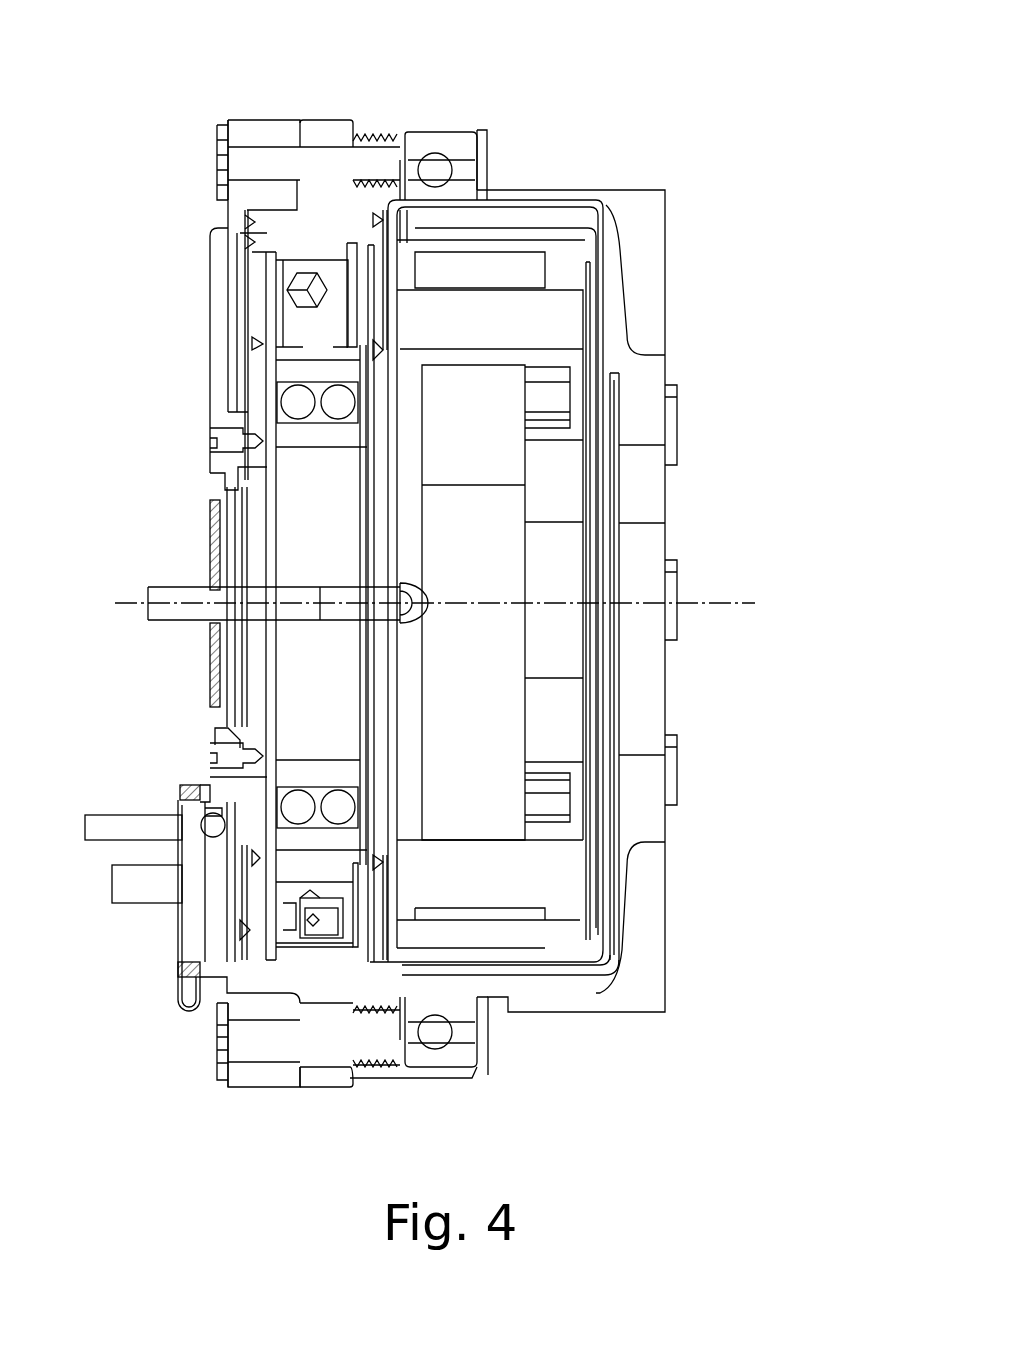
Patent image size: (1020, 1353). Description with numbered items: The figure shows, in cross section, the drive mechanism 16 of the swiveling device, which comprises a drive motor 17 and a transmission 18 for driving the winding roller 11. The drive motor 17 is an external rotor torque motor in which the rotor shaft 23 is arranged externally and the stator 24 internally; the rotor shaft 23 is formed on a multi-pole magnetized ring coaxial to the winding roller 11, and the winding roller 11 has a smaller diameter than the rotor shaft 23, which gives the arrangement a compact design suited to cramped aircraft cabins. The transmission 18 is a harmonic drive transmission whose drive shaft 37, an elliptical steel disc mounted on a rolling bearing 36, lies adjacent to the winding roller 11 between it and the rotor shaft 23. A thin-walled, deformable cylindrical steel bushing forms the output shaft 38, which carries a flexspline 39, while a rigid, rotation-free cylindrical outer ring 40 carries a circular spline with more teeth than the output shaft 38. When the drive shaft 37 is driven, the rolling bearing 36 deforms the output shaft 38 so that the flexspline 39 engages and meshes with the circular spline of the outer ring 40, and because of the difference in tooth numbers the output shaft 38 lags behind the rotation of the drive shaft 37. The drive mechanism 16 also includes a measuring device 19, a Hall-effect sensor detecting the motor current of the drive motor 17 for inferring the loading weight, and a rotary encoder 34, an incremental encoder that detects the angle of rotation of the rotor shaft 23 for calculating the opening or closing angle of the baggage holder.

The winding roller 11 is at (135, 385).
The drive mechanism 16 is at (623, 100).
The drive motor 17 is at (600, 398).
The transmission 18 is at (243, 233).
The measuring device 19 is at (593, 488).
The rotor shaft 23 is at (516, 257).
The stator 24 is at (560, 315).
The rotary encoder 34 is at (180, 787).
The rolling bearing 36 is at (293, 402).
The drive shaft 37 is at (300, 365).
The output shaft 38 is at (300, 327).
The flexspline 39 is at (310, 285).
The outer ring 40 is at (313, 258).